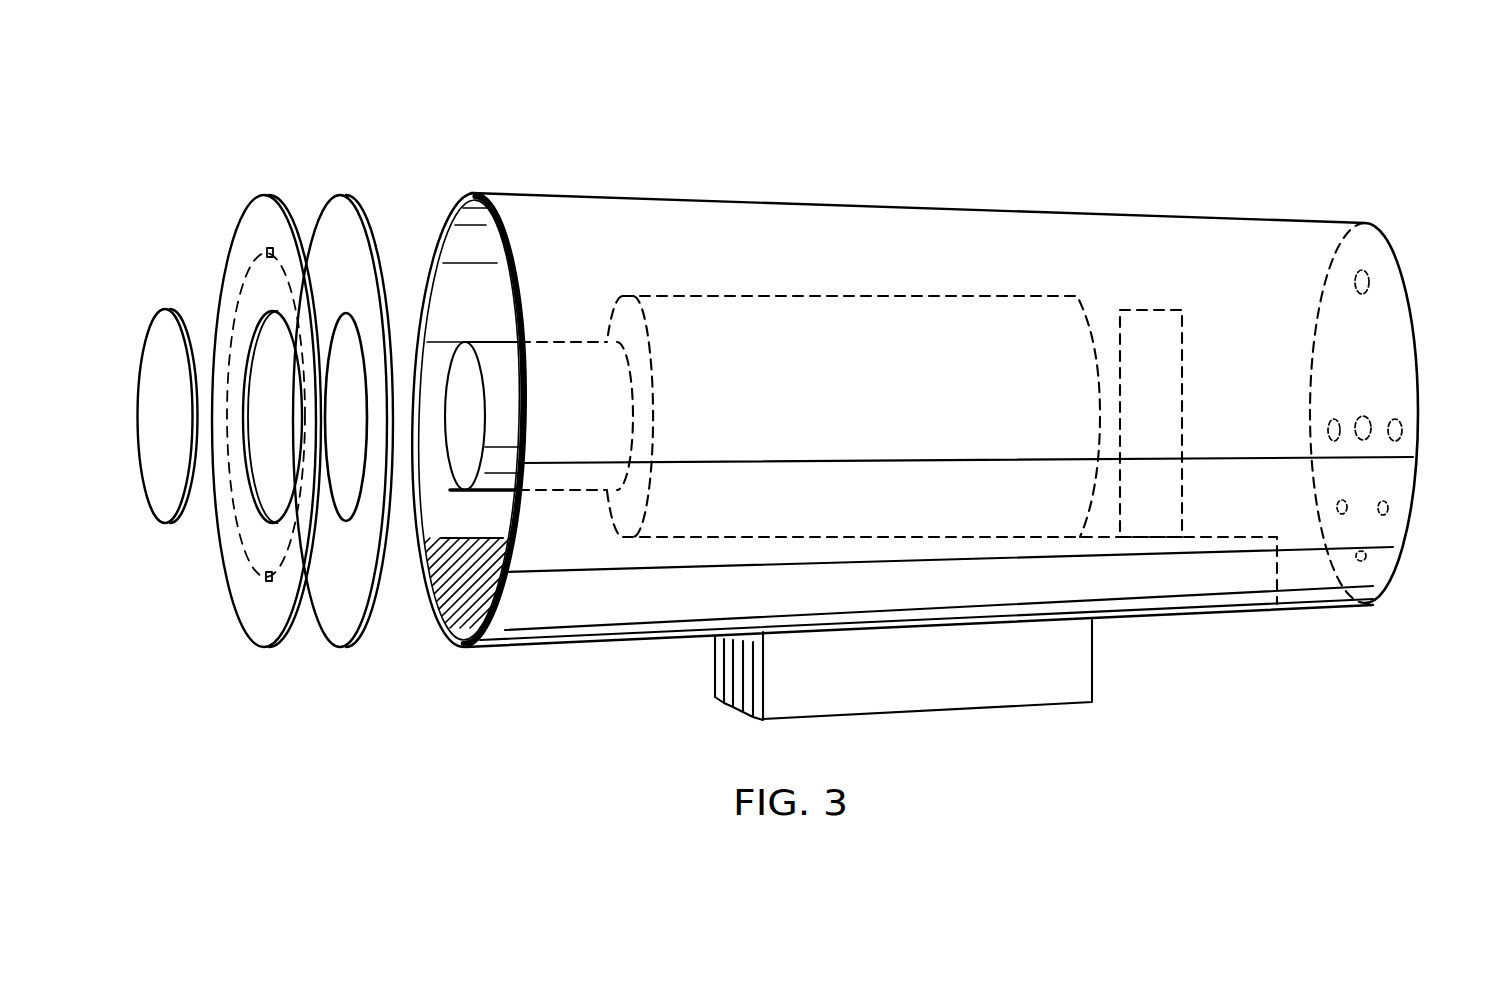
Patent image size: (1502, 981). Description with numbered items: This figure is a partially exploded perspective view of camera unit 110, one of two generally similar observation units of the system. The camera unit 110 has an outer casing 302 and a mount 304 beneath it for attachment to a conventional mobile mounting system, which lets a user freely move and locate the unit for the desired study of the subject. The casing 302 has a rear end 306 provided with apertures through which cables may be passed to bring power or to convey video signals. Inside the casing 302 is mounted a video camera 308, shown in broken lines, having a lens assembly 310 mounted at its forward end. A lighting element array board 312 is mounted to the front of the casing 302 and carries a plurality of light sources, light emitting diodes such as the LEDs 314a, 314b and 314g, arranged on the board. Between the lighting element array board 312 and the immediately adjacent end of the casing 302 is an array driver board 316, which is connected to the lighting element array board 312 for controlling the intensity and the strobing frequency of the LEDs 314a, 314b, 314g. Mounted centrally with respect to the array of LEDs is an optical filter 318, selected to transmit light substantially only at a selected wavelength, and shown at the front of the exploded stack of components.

The camera unit 110 is at (752, 131).
The outer casing 302 is at (937, 207).
The mount 304 is at (1095, 672).
The rear end 306 is at (1373, 343).
The video camera 308 is at (967, 327).
The lens assembly 310 is at (490, 357).
The lighting element array board 312 is at (270, 197).
The light emitting diode 314a is at (265, 250).
The light emitting diode 314b is at (300, 322).
The light emitting diode 314g is at (266, 584).
The array driver board 316 is at (347, 197).
The optical filter 318 is at (160, 520).